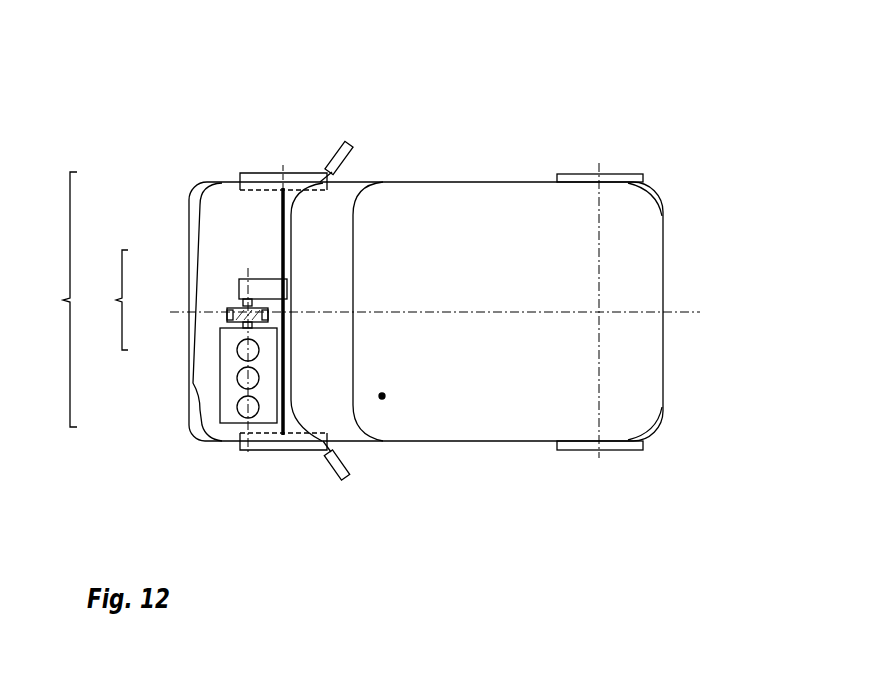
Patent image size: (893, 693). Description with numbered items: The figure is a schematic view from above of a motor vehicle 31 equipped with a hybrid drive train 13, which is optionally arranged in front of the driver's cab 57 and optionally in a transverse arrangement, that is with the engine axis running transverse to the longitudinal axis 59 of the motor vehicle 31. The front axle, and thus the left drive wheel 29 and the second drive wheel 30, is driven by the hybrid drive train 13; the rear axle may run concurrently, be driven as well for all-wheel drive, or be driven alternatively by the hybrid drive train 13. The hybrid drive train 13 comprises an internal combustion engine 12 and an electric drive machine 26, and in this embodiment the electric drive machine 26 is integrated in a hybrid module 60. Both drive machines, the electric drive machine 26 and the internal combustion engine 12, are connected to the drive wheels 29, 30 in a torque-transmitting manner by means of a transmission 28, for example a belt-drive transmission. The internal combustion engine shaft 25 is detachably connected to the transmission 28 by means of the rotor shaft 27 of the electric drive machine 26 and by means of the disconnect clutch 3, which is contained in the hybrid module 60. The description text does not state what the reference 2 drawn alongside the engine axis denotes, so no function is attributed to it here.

The housing 2 is at (239, 279).
The disconnect clutch 3 is at (232, 322).
The internal combustion engine 12 is at (230, 350).
The hybrid drive train 13 is at (52, 299).
The internal combustion engine shaft 25 is at (224, 328).
The electric drive machine 26 is at (227, 314).
The rotor shaft 27 is at (243, 302).
The transmission 28 is at (239, 292).
The left drive wheel 29 is at (302, 452).
The second drive wheel 30 is at (318, 172).
The motor vehicle 31 is at (714, 88).
The driver's cab 57 is at (382, 396).
The longitudinal axis 59 is at (517, 313).
The hybrid module 60 is at (101, 300).